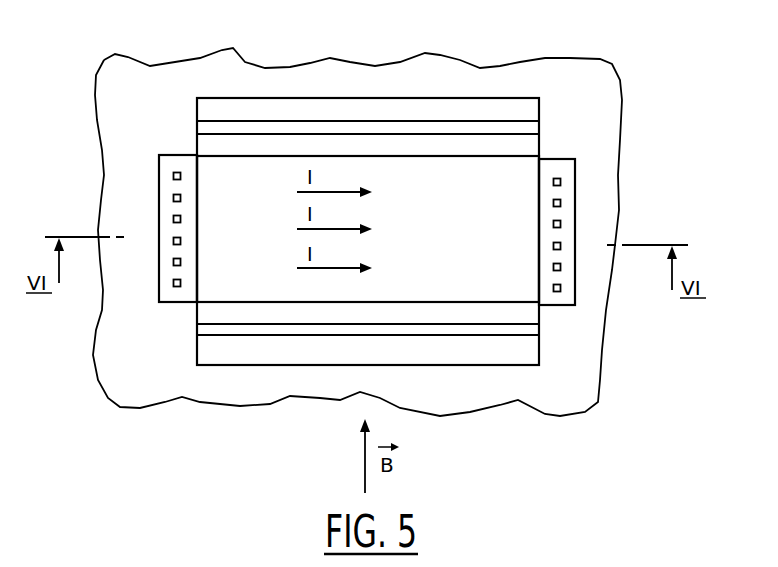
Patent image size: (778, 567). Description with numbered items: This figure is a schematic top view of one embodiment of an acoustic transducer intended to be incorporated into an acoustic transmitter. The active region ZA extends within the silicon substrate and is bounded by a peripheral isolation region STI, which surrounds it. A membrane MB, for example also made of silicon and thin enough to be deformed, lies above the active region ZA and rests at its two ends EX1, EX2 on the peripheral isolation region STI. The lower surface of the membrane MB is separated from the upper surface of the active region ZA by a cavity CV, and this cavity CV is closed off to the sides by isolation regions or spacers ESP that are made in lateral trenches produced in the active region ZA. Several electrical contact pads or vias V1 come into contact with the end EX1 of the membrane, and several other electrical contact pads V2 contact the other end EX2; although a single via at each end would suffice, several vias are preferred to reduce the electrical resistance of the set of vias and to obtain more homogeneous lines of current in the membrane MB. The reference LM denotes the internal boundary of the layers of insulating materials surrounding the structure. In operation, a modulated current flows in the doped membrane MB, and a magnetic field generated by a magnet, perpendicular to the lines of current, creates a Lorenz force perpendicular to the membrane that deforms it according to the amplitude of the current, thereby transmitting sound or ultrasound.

The isolation regions or spacers ESP is at (262, 145).
The internal boundary of the layers of insulating materials LM is at (435, 125).
The active region ZA is at (480, 96).
The peripheral isolation region STI is at (578, 83).
The end of the membrane EX1 is at (165, 168).
The end of the membrane EX2 is at (570, 192).
The electrical contact pads or vias V1 is at (172, 220).
The electrical contact pads or vias V2 is at (561, 225).
The membrane MB is at (572, 154).
The cavity CV is at (500, 286).